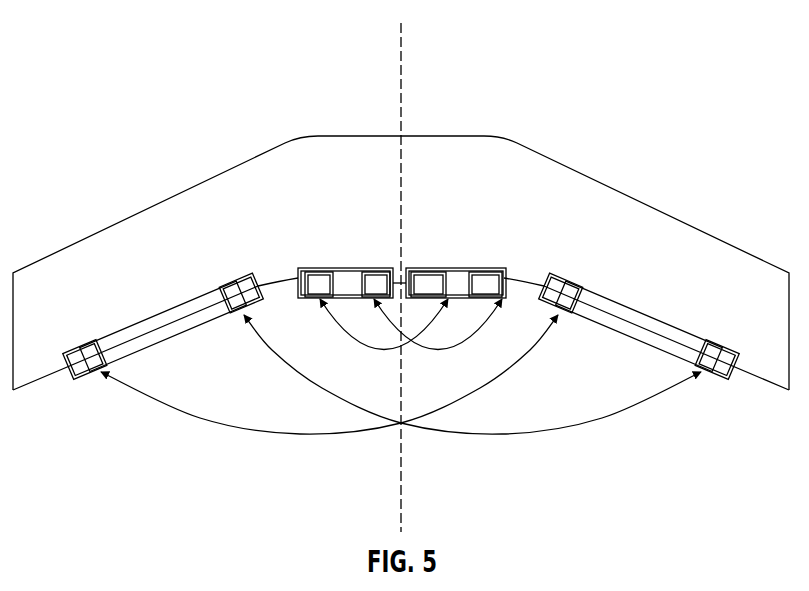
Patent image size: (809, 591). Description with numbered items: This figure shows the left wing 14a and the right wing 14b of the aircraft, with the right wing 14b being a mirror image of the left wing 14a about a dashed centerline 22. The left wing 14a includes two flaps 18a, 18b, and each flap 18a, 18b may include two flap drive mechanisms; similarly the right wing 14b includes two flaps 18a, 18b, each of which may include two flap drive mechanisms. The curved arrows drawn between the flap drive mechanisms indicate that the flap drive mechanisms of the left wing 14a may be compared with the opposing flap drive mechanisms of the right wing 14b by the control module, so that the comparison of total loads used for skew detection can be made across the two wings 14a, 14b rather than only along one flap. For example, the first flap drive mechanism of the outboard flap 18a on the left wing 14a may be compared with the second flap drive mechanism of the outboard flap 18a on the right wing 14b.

The left wing 14a is at (217, 175).
The right wing 14b is at (585, 175).
The flap 18a is at (163, 318).
The flap 18b is at (350, 271).
The centerline / axis of symmetry 22 is at (397, 117).